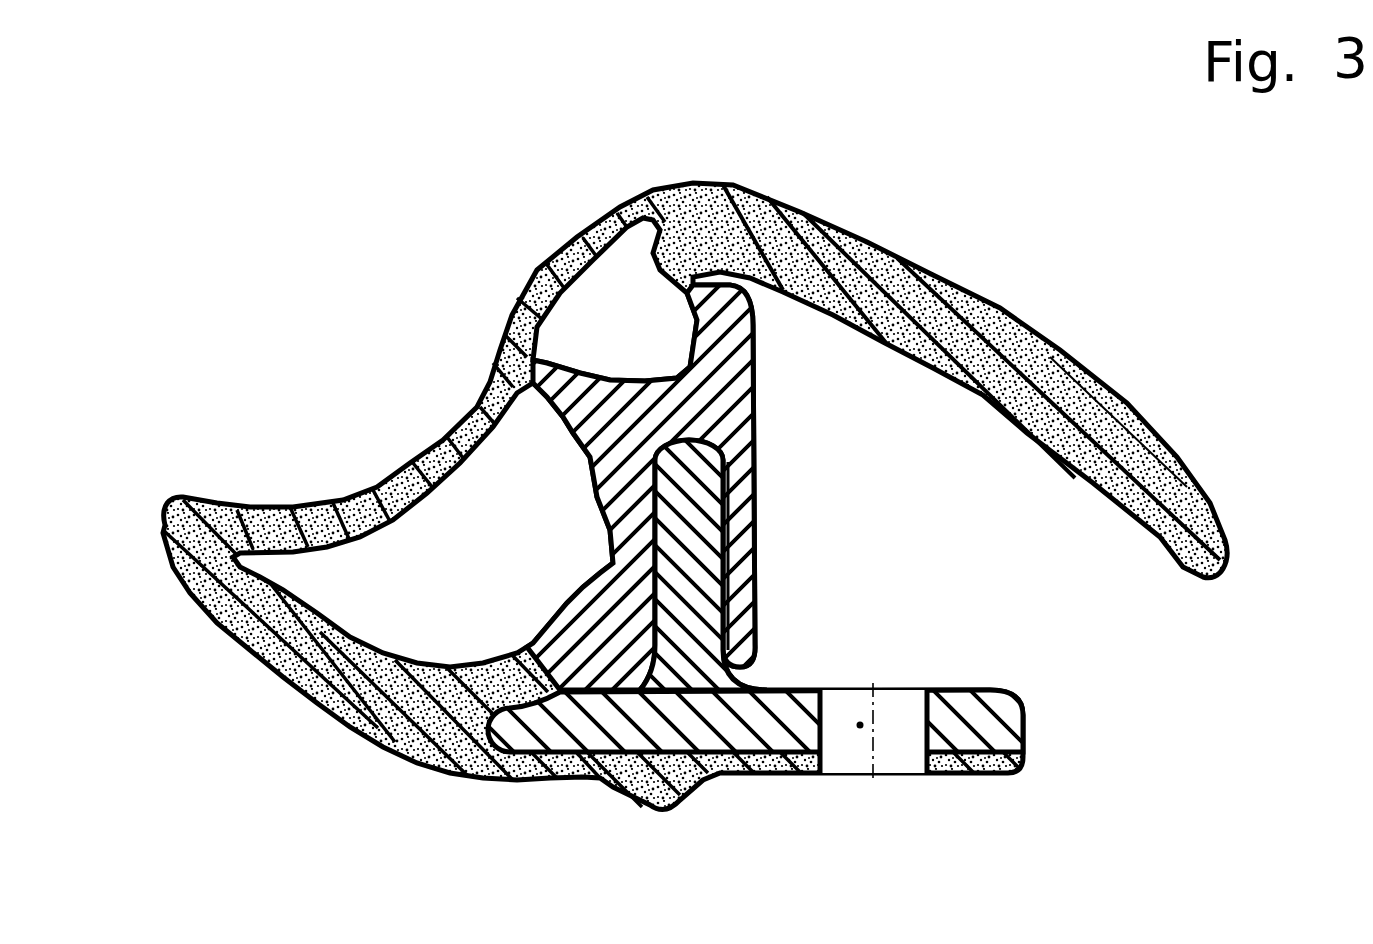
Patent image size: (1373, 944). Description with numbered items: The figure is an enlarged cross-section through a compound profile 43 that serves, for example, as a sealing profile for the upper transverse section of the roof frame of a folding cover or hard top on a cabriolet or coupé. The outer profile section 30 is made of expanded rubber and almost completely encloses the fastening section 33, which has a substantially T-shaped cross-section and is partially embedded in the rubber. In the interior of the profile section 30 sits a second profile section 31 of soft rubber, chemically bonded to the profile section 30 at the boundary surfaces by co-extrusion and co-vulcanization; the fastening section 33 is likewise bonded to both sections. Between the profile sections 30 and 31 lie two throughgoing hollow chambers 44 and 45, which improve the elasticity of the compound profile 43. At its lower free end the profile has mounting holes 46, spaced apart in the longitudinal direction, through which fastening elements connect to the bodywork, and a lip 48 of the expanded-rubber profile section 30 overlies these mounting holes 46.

The profile section 30 is at (197, 603).
The profile section 31 is at (759, 513).
The fastening section 33 is at (1027, 707).
The compound profile 43 is at (317, 713).
The hollow chamber 44 is at (465, 557).
The hollow chamber 45 is at (633, 323).
The mounting hole 46 is at (860, 727).
The lip 48 is at (1210, 507).